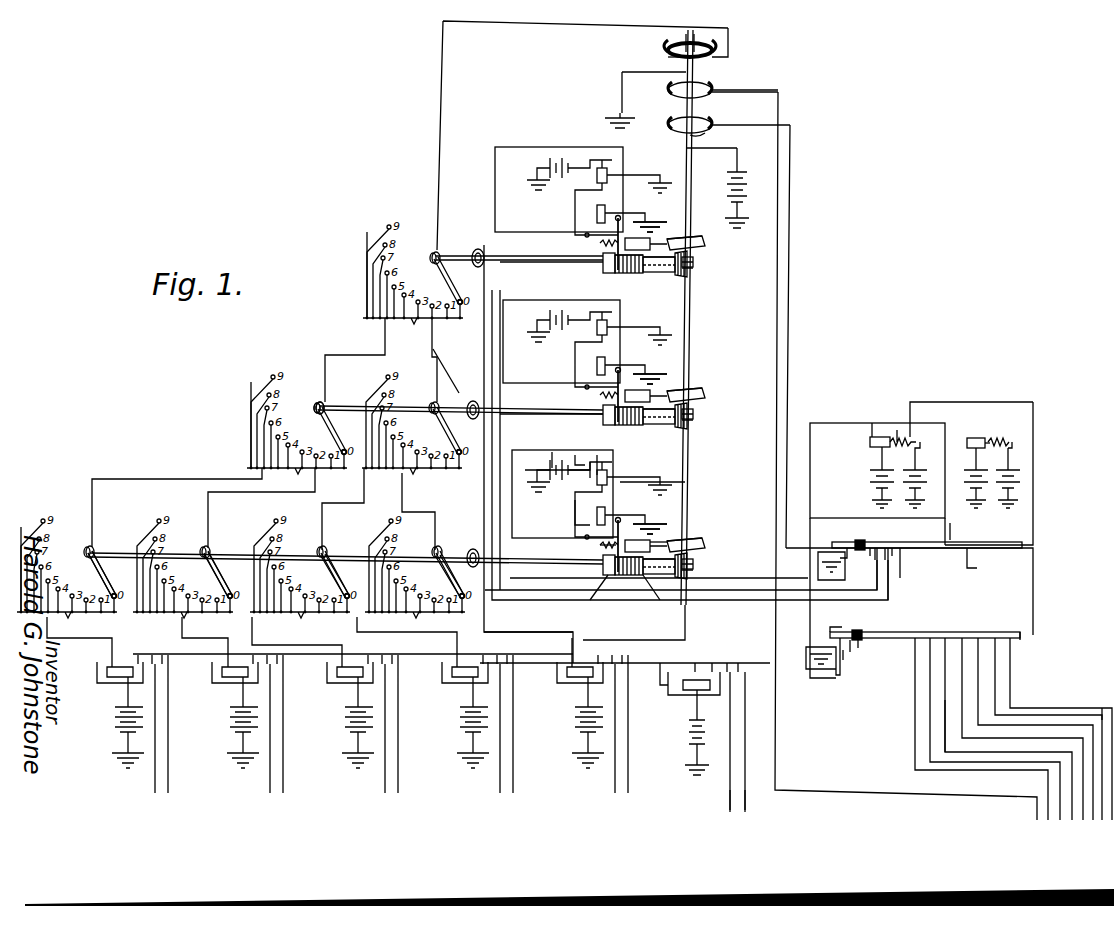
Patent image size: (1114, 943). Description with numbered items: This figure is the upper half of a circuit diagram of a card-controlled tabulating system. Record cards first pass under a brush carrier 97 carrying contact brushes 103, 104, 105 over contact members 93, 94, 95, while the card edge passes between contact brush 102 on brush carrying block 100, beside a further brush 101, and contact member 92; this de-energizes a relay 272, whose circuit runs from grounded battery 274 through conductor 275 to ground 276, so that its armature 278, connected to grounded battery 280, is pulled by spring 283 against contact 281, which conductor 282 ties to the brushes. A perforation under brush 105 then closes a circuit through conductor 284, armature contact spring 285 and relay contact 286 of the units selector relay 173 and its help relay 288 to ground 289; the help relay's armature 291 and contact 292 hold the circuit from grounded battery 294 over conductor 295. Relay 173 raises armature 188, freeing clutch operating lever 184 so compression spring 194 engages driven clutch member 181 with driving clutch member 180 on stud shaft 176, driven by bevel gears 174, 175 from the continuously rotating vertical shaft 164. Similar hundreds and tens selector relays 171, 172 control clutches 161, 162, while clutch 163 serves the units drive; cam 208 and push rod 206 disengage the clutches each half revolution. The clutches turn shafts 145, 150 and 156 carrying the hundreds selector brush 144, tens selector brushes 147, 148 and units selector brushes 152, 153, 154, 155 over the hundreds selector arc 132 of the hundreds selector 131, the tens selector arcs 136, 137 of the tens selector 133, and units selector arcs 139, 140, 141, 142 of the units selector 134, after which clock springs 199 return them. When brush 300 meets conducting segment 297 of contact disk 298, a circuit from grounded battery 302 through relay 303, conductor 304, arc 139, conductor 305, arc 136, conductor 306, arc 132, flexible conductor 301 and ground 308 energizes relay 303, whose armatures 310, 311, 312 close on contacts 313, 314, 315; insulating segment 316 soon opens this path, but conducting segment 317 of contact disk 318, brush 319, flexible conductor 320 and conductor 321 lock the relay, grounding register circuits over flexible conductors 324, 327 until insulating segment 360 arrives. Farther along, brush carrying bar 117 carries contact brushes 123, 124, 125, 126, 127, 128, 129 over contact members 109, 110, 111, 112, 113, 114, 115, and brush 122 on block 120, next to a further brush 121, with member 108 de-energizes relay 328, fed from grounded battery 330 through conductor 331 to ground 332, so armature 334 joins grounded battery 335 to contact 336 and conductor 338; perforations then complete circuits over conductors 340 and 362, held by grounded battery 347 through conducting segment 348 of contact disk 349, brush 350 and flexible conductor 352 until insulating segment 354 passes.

The contact member 92 is at (844, 567).
The contact member 93 is at (878, 592).
The contact member 94 is at (890, 594).
The contact member 95 is at (903, 580).
The brush carrier 97 is at (985, 564).
The brush carrying block 100 is at (856, 540).
The brush 101 is at (885, 538).
The contact brush 102 is at (855, 541).
The contact brush 103 is at (909, 538).
The contact brush 104 is at (878, 558).
The contact brush 105 is at (888, 562).
The contact member 108 is at (844, 662).
The contact member 109 is at (916, 658).
The contact member 110 is at (931, 662).
The contact member 111 is at (946, 668).
The contact member 112 is at (965, 665).
The contact member 113 is at (981, 660).
The contact member 114 is at (998, 655).
The contact member 115 is at (1013, 652).
The brush carrying bar 117 is at (1022, 633).
The brush carrying block 120 is at (840, 633).
The brush 121 is at (860, 648).
The contact brush 122 is at (852, 652).
The contact brush 123 is at (916, 645).
The contact brush 124 is at (931, 645).
The contact brush 125 is at (962, 632).
The contact brush 126 is at (963, 645).
The contact brush 127 is at (999, 633).
The contact brush 128 is at (997, 645).
The contact brush 129 is at (1013, 645).
The hundreds selector 131 is at (350, 256).
The hundreds selector arc 132 is at (416, 284).
The tens selector 133 is at (243, 398).
The units selector 134 is at (40, 514).
The tens selector arc 136 is at (415, 434).
The tens selector arc 137 is at (300, 433).
The units selector arc 139 is at (418, 587).
The units selector arc 140 is at (303, 575).
The units selector arc 141 is at (186, 575).
The units selector arc 142 is at (70, 575).
The hundreds selector brush 144 is at (478, 249).
The shaft 145 is at (556, 262).
The tens selector brush 147 is at (450, 420).
The tens selector brush 148 is at (325, 408).
The shaft 150 is at (500, 418).
The units selector brush 152 is at (442, 570).
The units selector brush 153 is at (350, 575).
The units selector brush 154 is at (233, 575).
The units selector brush 155 is at (118, 575).
The shaft 156 is at (512, 568).
The clutch 161 is at (626, 280).
The clutch 162 is at (626, 426).
The clutch 163 is at (650, 582).
The vertical shaft 164 is at (691, 356).
The hundreds selector relay 171 is at (603, 186).
The tens selector relay 172 is at (602, 340).
The units selector relay 173 is at (598, 486).
The bevel gear 174 is at (694, 266).
The bevel gear 175 is at (687, 280).
The stud shaft 176 is at (690, 584).
The driving clutch member 180 is at (645, 278).
The driven clutch member 181 is at (612, 258).
The clutch operating lever 184 is at (645, 222).
The armature 188 is at (600, 545).
The compression spring 194 is at (603, 578).
The clock spring 199 is at (480, 268).
The push rod 206 is at (655, 548).
The cam 208 is at (705, 246).
The relay 272 is at (978, 437).
The grounded battery 274 is at (965, 526).
The conductor 275 is at (935, 413).
The ground 276 is at (828, 588).
The armature 278 is at (992, 440).
The grounded battery 280 is at (1018, 484).
The relay contact 281 is at (1010, 438).
The conductor 282 is at (1035, 522).
The spring 283 is at (950, 412).
The conductor 284 is at (796, 575).
The armature contact spring 285 is at (582, 513).
The relay contact 286 is at (625, 476).
The help relay 288 is at (590, 480).
The ground 289 is at (625, 496).
The armature 291 is at (577, 457).
The relay contact 292 is at (587, 463).
The grounded battery 294 is at (500, 480).
The conductor 295 is at (494, 505).
The conducting segment 297 is at (668, 48).
The contact disk 298 is at (666, 58).
The contact brush 300 is at (716, 56).
The flexible conductor 301 is at (444, 100).
The grounded battery 302 is at (702, 724).
The relay 303 is at (690, 716).
The conductor 304 is at (574, 636).
The conductor 305 is at (402, 508).
The conductor 306 is at (438, 372).
The ground 308 is at (620, 120).
The locking armature 310 is at (735, 722).
The armature 311 is at (745, 705).
The armature 312 is at (740, 690).
The relay contact 313 is at (705, 657).
The relay contact 314 is at (722, 648).
The relay contact 315 is at (744, 657).
The insulating segment 316 is at (684, 42).
The conducting segment 317 is at (680, 88).
The contact disk 318 is at (674, 95).
The contact brush 319 is at (716, 90).
The flexible conductor 320 is at (780, 308).
The conductor 321 is at (663, 666).
The flexible conductor 324 is at (728, 802).
The flexible conductor 327 is at (748, 806).
The relay 328 is at (882, 436).
The grounded battery 330 is at (876, 480).
The conductor 331 is at (812, 438).
The ground 332 is at (808, 670).
The armature 334 is at (916, 455).
The grounded battery 335 is at (878, 472).
The relay contact 336 is at (898, 436).
The conductor 338 is at (1036, 556).
The conductor 340 is at (943, 728).
The grounded battery 347 is at (750, 186).
The conducting segment 348 is at (672, 125).
The contact disk 349 is at (682, 150).
The contact brush 350 is at (712, 136).
The flexible conductor 352 is at (792, 268).
The insulating segment 354 is at (715, 130).
The insulating segment 360 is at (710, 88).
The conductor 362 is at (1112, 712).